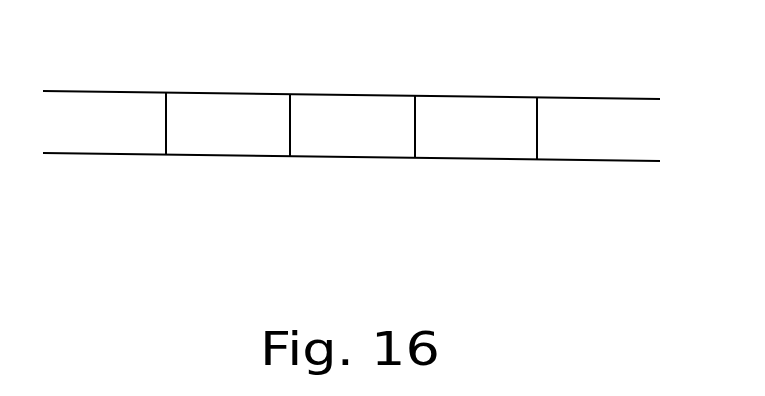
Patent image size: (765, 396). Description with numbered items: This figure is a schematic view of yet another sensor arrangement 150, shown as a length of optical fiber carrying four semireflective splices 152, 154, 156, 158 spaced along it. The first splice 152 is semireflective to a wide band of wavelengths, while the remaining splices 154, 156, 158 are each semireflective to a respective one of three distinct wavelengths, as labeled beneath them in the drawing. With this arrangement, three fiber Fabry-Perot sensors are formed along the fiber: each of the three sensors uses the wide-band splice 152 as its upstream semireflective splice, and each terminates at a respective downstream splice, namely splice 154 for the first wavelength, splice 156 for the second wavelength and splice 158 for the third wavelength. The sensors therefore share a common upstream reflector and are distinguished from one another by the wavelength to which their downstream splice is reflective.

The sensor arrangement 150 is at (160, 216).
The semireflective splice 152 is at (166, 115).
The semireflective splice 154 is at (290, 117).
The semireflective splice 156 is at (415, 119).
The semireflective splice 158 is at (537, 121).